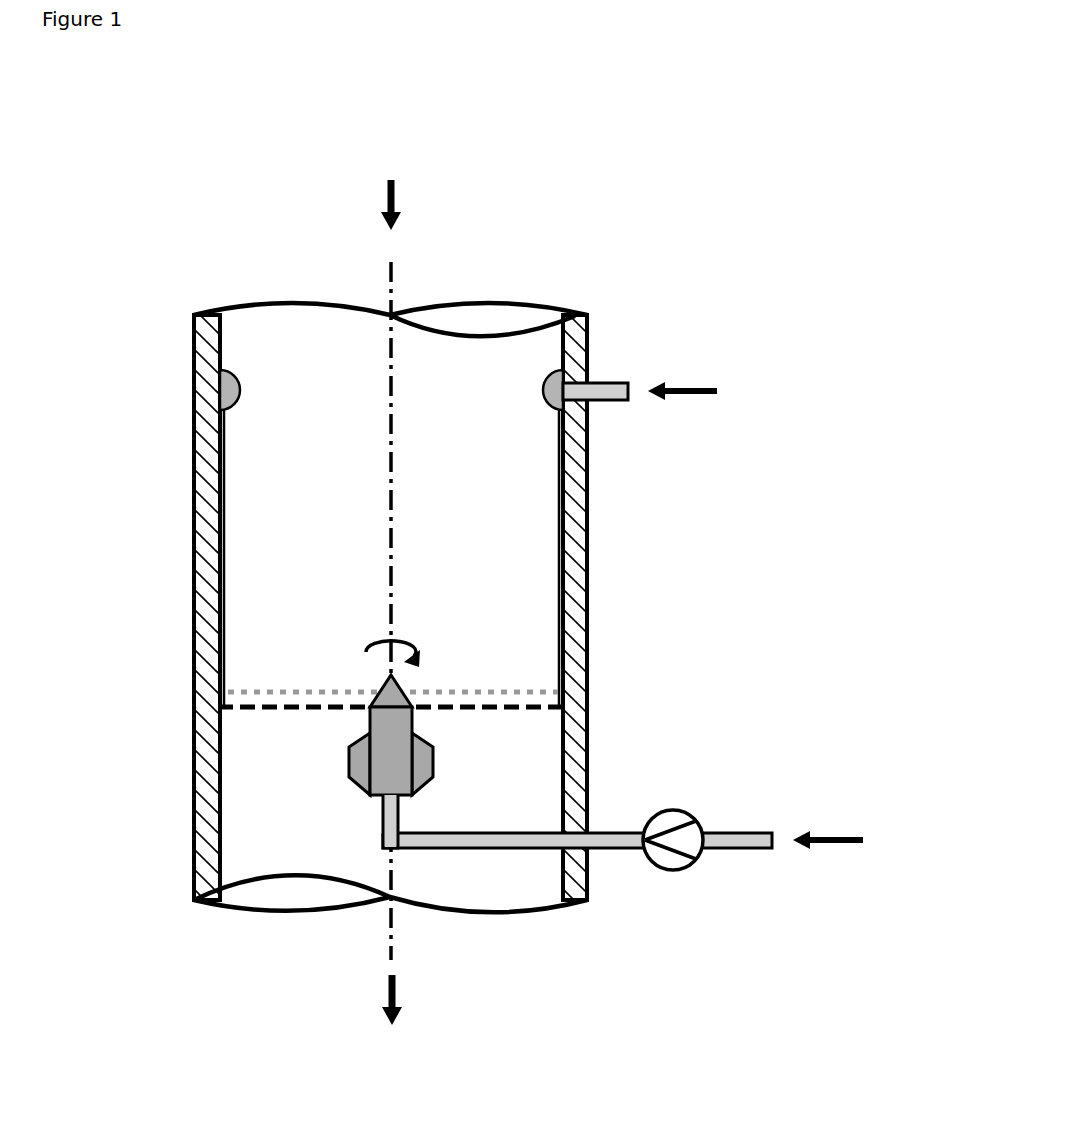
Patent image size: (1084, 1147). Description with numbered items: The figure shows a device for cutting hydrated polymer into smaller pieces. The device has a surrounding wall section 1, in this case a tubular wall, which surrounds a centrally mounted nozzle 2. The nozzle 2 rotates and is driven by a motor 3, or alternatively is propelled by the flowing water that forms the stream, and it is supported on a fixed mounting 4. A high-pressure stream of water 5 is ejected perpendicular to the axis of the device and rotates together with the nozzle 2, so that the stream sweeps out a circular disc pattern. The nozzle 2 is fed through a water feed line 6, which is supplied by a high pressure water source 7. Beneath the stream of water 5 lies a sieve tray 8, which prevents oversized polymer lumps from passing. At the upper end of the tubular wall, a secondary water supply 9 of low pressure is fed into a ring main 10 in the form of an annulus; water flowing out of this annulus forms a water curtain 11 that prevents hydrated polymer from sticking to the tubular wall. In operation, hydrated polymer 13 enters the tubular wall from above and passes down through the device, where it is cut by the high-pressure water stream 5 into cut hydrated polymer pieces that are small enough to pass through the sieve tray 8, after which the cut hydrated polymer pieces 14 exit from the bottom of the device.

The surrounding wall section 1 is at (208, 468).
The nozzle 2 is at (394, 695).
The motor 3 is at (423, 759).
The fixed mounting 4 is at (383, 822).
The high-pressure stream of water 5 is at (258, 690).
The water feed line 6 is at (505, 842).
The high pressure water source 7 is at (673, 870).
The sieve tray 8 is at (277, 707).
The secondary water supply 9 is at (597, 392).
The ring main 10 is at (555, 388).
The water curtain 11 is at (563, 540).
The hydrated polymer 13 is at (392, 160).
The cut hydrated polymer pieces 14 is at (390, 1042).